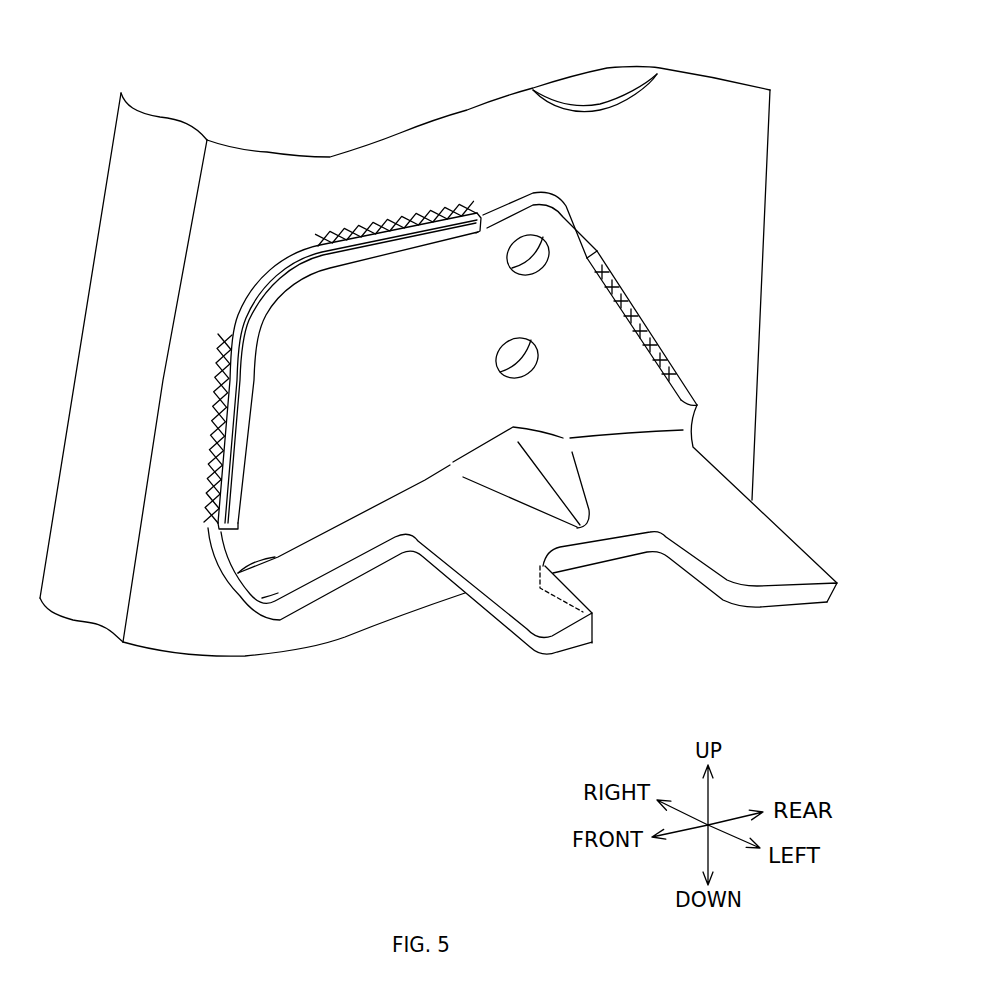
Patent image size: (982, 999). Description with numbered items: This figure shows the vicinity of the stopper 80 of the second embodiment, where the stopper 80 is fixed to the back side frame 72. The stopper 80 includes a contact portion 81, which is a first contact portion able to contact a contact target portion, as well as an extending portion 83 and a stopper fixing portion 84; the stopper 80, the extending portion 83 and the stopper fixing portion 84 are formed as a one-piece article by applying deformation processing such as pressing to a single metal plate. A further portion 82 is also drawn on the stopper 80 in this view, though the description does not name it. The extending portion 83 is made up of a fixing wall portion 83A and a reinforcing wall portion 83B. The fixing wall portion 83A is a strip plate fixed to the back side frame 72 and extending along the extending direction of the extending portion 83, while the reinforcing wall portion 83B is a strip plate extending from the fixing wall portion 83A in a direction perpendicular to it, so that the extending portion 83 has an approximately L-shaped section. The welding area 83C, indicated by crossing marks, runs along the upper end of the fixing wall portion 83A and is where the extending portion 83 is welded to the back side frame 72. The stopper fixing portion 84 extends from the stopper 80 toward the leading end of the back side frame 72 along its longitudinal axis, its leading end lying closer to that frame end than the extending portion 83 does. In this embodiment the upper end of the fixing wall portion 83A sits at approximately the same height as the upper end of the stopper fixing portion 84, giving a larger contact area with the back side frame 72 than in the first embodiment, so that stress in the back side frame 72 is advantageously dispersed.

The back side frame 72 is at (771, 170).
The stopper 80 is at (767, 508).
The contact portion 81 is at (708, 577).
The notch 82 is at (590, 613).
The extending portion 83 is at (347, 588).
The fixing wall portion 83A is at (252, 553).
The reinforcing wall portion 83B is at (280, 593).
The welding area 83C is at (335, 235).
The stopper fixing portion 84 is at (595, 345).